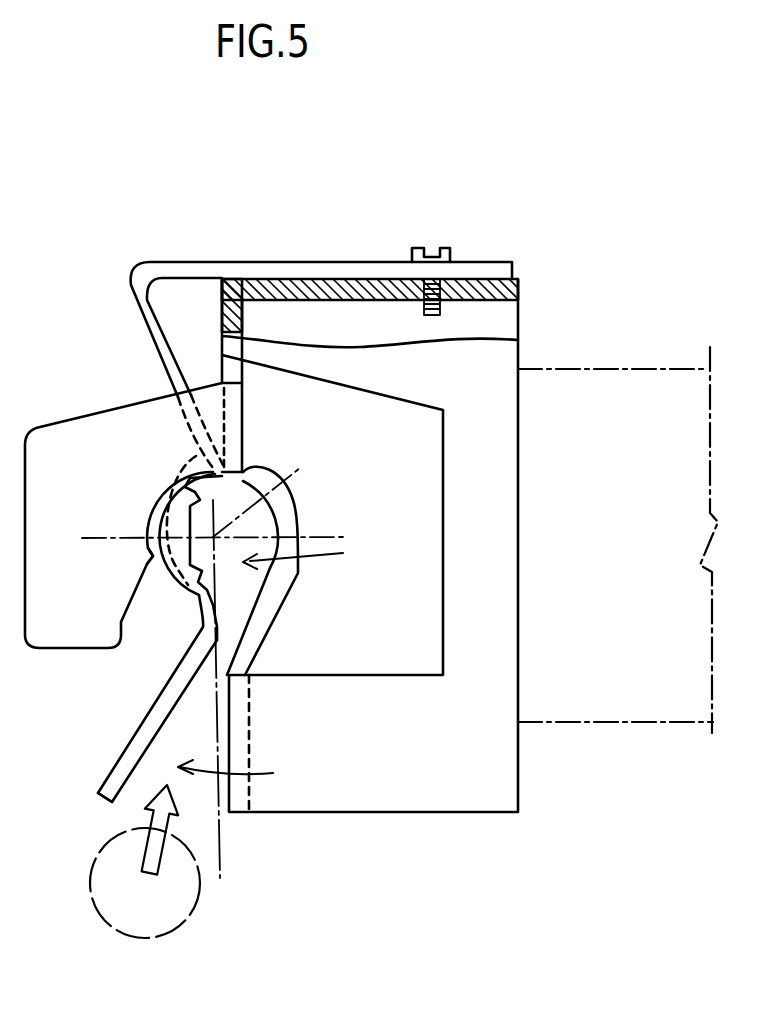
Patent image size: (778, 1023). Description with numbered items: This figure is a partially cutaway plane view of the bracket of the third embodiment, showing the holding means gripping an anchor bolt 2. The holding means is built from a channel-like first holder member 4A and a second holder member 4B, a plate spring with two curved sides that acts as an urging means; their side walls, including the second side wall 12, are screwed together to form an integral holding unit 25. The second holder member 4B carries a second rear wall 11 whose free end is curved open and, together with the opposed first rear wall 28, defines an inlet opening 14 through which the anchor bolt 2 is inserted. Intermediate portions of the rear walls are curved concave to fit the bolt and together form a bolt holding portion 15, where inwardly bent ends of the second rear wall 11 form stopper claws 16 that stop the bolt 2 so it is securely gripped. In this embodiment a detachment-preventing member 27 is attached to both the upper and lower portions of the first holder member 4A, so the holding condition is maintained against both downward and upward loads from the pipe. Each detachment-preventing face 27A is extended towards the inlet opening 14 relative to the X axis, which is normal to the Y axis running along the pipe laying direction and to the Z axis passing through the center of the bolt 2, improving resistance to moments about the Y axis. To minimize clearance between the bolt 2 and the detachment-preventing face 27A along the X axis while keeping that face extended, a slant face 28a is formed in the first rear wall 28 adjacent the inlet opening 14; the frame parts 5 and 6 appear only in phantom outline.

The anchor bolt 2 is at (117, 908).
The first holder member 4A is at (223, 308).
The second holder member 4B is at (101, 773).
The frame 5 is at (600, 373).
The frame member 6 is at (618, 502).
The second rear wall 11 is at (153, 717).
The second side wall 12 is at (310, 266).
The inlet opening 14 is at (241, 775).
The bolt holding portion 15 is at (310, 556).
The stopper claws 16 is at (180, 513).
The holding unit 25 is at (450, 252).
The detachment-preventing member 27 is at (70, 437).
The detachment-preventing face 27A is at (155, 566).
The first rear wall 28 is at (245, 722).
The slant face 28a is at (248, 614).
The X axis X is at (199, 539).
The Y axis Y is at (222, 708).
The Z axis Z is at (269, 481).